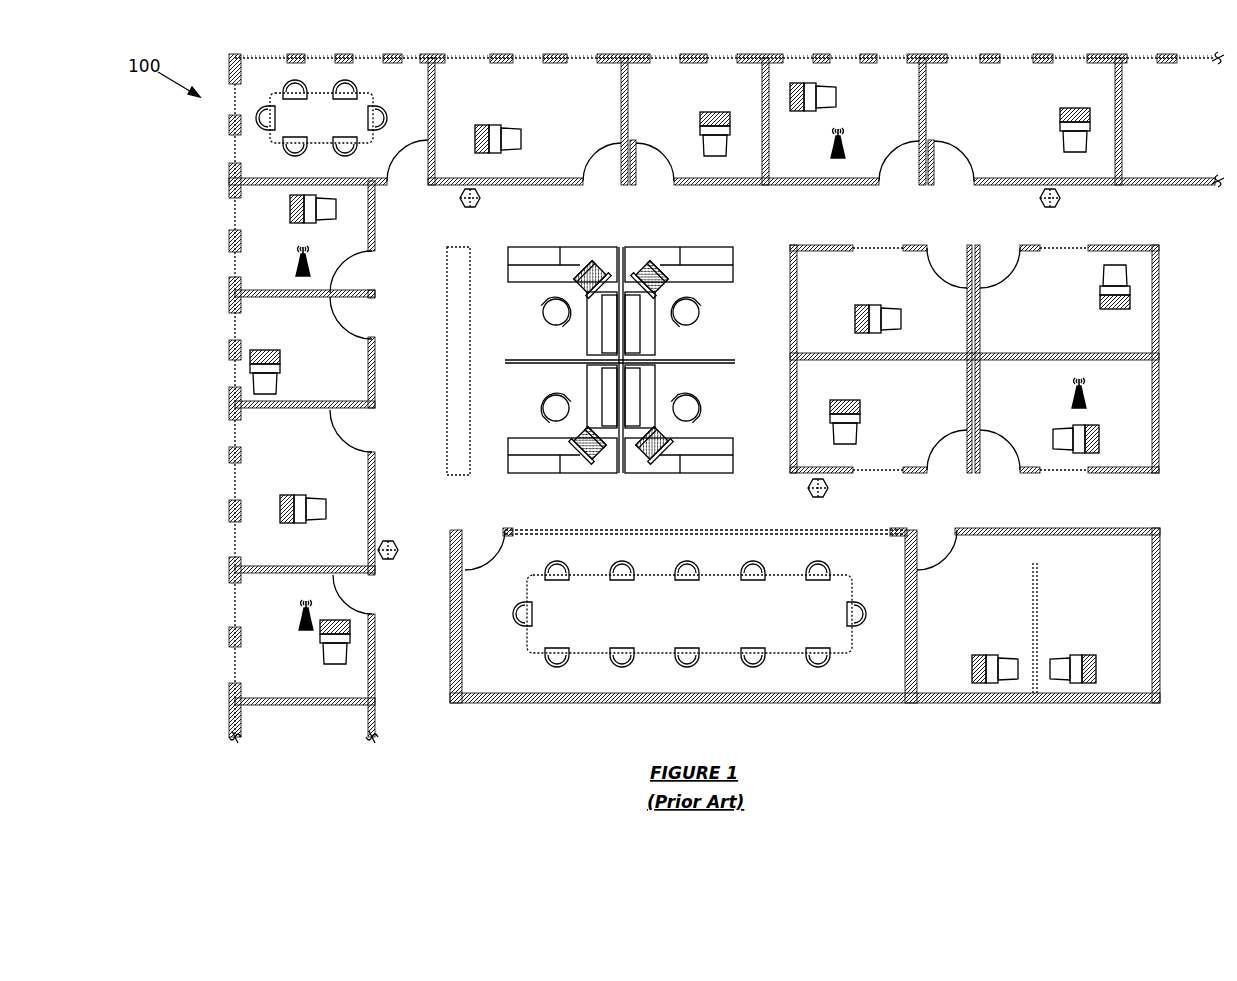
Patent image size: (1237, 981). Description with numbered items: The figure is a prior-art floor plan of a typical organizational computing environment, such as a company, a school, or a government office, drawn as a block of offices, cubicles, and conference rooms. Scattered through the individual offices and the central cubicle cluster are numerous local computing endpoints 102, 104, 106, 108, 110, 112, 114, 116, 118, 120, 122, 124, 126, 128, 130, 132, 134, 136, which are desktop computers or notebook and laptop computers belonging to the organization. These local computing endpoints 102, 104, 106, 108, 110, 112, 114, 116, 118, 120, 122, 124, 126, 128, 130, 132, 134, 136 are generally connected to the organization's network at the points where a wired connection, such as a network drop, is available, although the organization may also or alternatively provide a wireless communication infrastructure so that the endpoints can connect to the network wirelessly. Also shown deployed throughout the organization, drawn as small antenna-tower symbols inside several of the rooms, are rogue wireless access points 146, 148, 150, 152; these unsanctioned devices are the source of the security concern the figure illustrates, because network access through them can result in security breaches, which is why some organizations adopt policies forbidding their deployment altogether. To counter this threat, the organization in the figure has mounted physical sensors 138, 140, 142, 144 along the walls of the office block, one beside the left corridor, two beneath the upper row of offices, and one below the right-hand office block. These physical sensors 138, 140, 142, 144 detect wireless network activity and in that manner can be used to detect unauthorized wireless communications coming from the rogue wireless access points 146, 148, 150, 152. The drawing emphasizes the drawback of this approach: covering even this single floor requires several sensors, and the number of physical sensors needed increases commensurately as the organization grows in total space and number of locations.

The local computing endpoint 102 is at (492, 132).
The local computing endpoint 104 is at (702, 120).
The local computing endpoint 106 is at (836, 100).
The local computing endpoint 108 is at (1062, 130).
The local computing endpoint 110 is at (1100, 295).
The local computing endpoint 112 is at (880, 312).
The local computing endpoint 114 is at (1055, 440).
The local computing endpoint 116 is at (860, 402).
The local computing endpoint 118 is at (1097, 658).
The local computing endpoint 120 is at (972, 660).
The local computing endpoint 122 is at (660, 468).
The local computing endpoint 124 is at (588, 466).
The local computing endpoint 126 is at (652, 254).
The local computing endpoint 128 is at (590, 256).
The local computing endpoint 130 is at (316, 222).
The local computing endpoint 132 is at (280, 372).
The local computing endpoint 134 is at (296, 498).
The local computing endpoint 136 is at (320, 652).
The physical sensor 138 is at (394, 542).
The physical sensor 140 is at (480, 205).
The physical sensor 142 is at (1040, 204).
The physical sensor 144 is at (810, 494).
The rogue wireless access point 146 is at (297, 618).
The rogue wireless access point 148 is at (297, 256).
The rogue wireless access point 150 is at (830, 138).
The rogue wireless access point 152 is at (1082, 398).